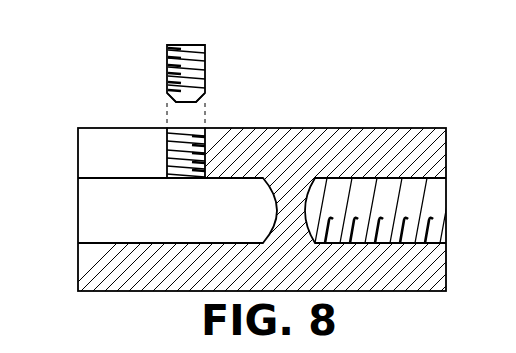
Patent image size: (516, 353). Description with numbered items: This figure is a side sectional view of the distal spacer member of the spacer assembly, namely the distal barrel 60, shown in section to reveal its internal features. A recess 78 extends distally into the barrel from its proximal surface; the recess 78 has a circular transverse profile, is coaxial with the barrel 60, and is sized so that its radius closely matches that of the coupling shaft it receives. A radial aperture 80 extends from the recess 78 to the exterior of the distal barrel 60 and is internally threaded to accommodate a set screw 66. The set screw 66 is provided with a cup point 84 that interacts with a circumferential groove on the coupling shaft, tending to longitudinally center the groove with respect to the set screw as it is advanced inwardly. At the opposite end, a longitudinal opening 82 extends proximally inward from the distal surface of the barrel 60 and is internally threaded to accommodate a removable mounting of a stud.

The distal barrel 60 is at (100, 128).
The set screw 66 is at (198, 51).
The recess 78 is at (118, 242).
The radial aperture 80 is at (182, 165).
The longitudinal opening 82 is at (421, 181).
The cup point 84 is at (199, 100).